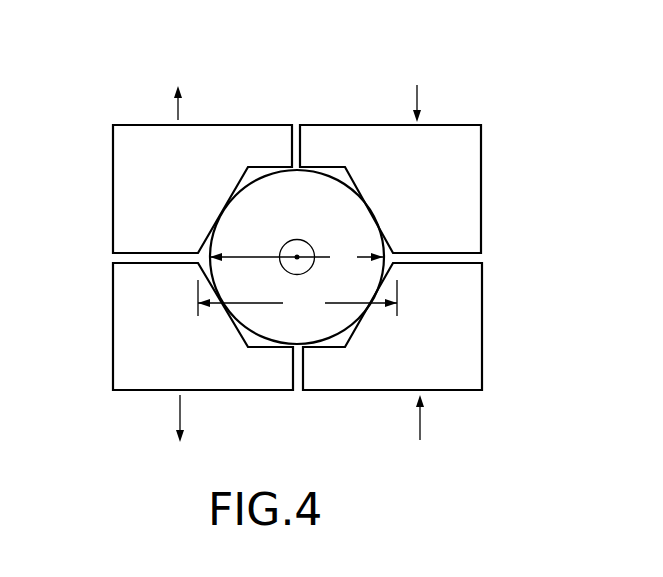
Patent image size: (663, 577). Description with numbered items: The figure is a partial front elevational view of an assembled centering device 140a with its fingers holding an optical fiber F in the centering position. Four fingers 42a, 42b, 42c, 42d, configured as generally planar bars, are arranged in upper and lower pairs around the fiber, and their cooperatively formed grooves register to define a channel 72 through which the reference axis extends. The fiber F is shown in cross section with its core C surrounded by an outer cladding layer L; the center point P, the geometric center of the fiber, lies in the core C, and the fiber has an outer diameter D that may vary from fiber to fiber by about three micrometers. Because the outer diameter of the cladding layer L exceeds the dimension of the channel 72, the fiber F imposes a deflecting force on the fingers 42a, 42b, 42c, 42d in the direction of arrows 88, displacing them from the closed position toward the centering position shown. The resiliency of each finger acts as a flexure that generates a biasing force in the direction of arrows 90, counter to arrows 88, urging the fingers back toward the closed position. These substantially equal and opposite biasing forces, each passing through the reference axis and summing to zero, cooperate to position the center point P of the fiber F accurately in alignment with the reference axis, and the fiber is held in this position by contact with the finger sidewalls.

The centering device 140a is at (463, 68).
The finger 42a is at (113, 170).
The finger 42b is at (481, 165).
The finger 42c is at (481, 318).
The finger 42d is at (113, 330).
The channel 72 is at (297, 298).
The arrows (deflecting direction) 88 is at (180, 266).
The arrows (biasing direction) 90 is at (417, 266).
The optical fiber F is at (262, 167).
The cladding layer L is at (310, 193).
The center point P is at (298, 256).
The core C is at (285, 269).
The outer diameter D is at (296, 257).